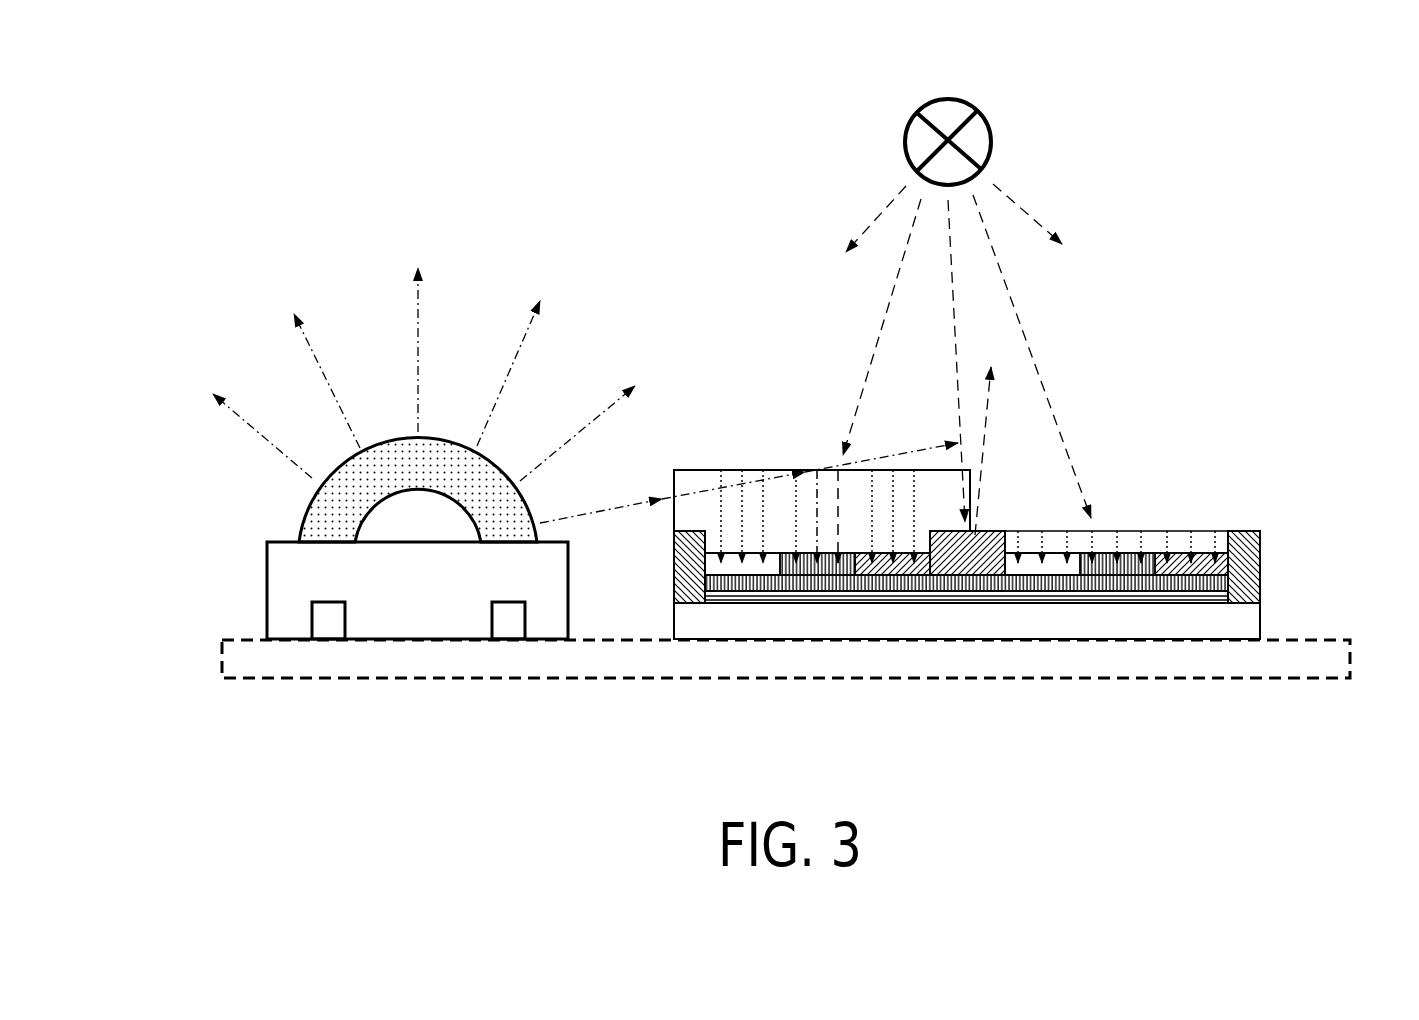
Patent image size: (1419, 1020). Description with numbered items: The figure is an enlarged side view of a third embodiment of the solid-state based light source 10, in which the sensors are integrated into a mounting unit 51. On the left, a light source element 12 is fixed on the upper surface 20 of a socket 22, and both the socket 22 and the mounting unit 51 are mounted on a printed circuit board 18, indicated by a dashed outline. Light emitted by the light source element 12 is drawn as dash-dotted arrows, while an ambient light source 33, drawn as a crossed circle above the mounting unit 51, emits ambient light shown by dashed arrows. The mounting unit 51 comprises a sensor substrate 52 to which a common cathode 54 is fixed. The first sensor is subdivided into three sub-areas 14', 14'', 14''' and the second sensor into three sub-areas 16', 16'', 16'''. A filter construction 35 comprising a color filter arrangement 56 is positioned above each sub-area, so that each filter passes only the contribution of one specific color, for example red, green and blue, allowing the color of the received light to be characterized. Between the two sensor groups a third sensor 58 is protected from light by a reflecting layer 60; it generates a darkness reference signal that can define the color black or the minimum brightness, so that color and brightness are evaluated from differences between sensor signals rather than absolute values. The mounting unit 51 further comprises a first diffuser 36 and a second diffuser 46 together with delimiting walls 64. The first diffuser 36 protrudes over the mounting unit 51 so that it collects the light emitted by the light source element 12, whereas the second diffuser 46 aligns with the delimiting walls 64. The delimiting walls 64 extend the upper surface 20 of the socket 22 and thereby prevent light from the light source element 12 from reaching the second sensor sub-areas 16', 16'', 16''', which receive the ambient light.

The solid-state based light source 10 is at (1228, 132).
The light source element 12 is at (341, 205).
The sub-area of the first sensor 14' is at (742, 642).
The sub-area of the first sensor 14'' is at (817, 642).
The sub-area of the first sensor 14''' is at (889, 642).
The sub-area of the second sensor 16' is at (1042, 642).
The sub-area of the second sensor 16'' is at (1117, 642).
The sub-area of the second sensor 16''' is at (1191, 642).
The printed circuit board 18 is at (425, 672).
The upper surface 20 is at (281, 541).
The socket 22 is at (280, 579).
The ambient light source 33 is at (992, 141).
The filter construction 35 is at (778, 513).
The first diffuser 36 is at (699, 478).
The second diffuser 46 is at (1203, 530).
The mounting unit 51 is at (1350, 539).
The sensor substrate 52 is at (688, 627).
The common cathode 54 is at (935, 597).
The color filter arrangement 56 is at (1126, 542).
The third sensor 58 is at (968, 604).
The reflecting layer 60 is at (996, 530).
The delimiting wall 64 is at (1243, 530).